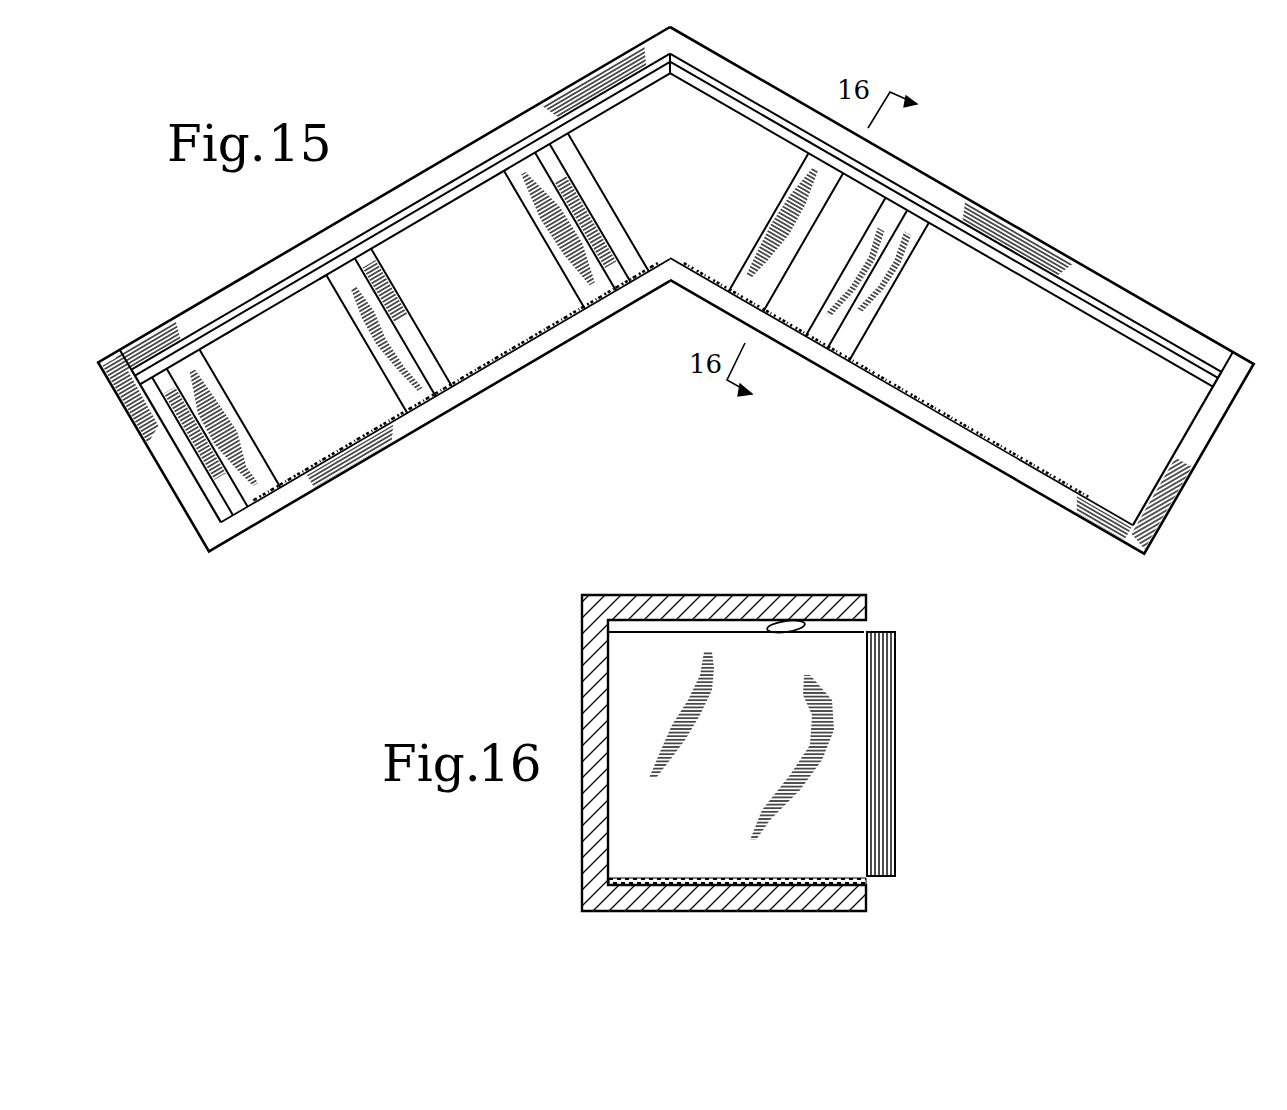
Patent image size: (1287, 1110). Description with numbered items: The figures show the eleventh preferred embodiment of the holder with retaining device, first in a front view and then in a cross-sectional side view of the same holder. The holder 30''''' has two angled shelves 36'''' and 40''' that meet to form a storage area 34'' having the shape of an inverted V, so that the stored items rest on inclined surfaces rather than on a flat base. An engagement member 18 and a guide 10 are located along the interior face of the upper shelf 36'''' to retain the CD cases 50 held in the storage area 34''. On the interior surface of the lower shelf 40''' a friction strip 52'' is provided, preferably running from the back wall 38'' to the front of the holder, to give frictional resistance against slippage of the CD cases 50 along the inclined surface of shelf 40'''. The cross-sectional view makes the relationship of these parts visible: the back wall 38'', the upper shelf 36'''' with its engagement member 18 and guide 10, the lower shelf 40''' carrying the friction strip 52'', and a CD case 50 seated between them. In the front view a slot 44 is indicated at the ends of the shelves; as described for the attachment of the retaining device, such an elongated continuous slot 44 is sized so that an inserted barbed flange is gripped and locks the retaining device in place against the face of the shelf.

In FIG. 15, the guide 10 is at (425, 208).
In FIG. 16, the guide 10 is at (797, 600).
In FIG. 15, the engagement member 18 is at (483, 182).
In FIG. 16, the engagement member 18 is at (763, 620).
In FIG. 15, the holder 30''''' is at (676, 290).
In FIG. 16, the holder 30''''' is at (659, 753).
In FIG. 15, the storage area 34'' is at (566, 158).
In FIG. 15, the shelf 36'''' is at (699, 220).
In FIG. 16, the shelf 36'''' is at (736, 577).
In FIG. 16, the back wall 38'' is at (532, 682).
In FIG. 15, the shelf 40''' is at (483, 428).
In FIG. 16, the shelf 40''' is at (805, 917).
In FIG. 15, the slot 44 is at (155, 443).
In FIG. 15, the CD cases 50 is at (905, 273).
In FIG. 16, the CD cases 50 is at (895, 723).
In FIG. 15, the friction strip 52'' is at (678, 382).
In FIG. 16, the friction strip 52'' is at (737, 832).